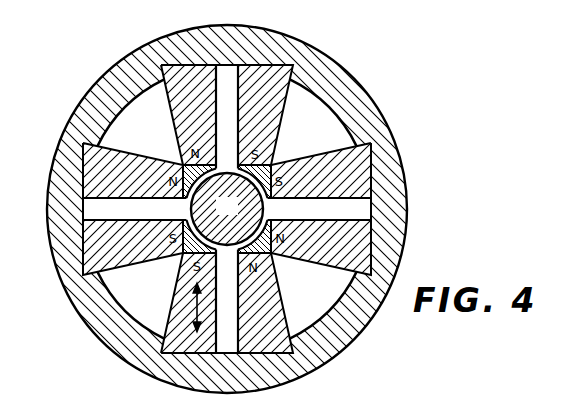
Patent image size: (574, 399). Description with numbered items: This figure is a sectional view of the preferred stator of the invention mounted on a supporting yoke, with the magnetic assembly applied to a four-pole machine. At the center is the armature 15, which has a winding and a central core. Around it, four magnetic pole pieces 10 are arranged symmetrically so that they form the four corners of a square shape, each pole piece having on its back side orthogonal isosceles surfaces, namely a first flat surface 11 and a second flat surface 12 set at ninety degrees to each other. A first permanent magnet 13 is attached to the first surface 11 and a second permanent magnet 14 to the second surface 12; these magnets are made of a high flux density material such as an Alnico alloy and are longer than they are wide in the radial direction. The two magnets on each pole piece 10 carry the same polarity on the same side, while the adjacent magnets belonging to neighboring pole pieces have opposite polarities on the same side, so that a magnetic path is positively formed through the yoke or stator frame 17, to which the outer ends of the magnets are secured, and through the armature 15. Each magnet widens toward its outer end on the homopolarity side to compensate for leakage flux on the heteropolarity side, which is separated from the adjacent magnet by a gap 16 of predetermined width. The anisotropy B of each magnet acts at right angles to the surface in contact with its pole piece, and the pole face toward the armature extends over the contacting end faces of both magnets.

The yoke 17 is at (266, 43).
The first permanent magnet 13 is at (177, 105).
The second permanent magnet 14 is at (148, 156).
The first flat surface 11 is at (217, 162).
The second flat surface 12 is at (177, 201).
The gap 16 is at (95, 208).
The magnetic pole piece 10 is at (207, 170).
The armature 15 is at (219, 215).
The anisotropy B is at (191, 306).